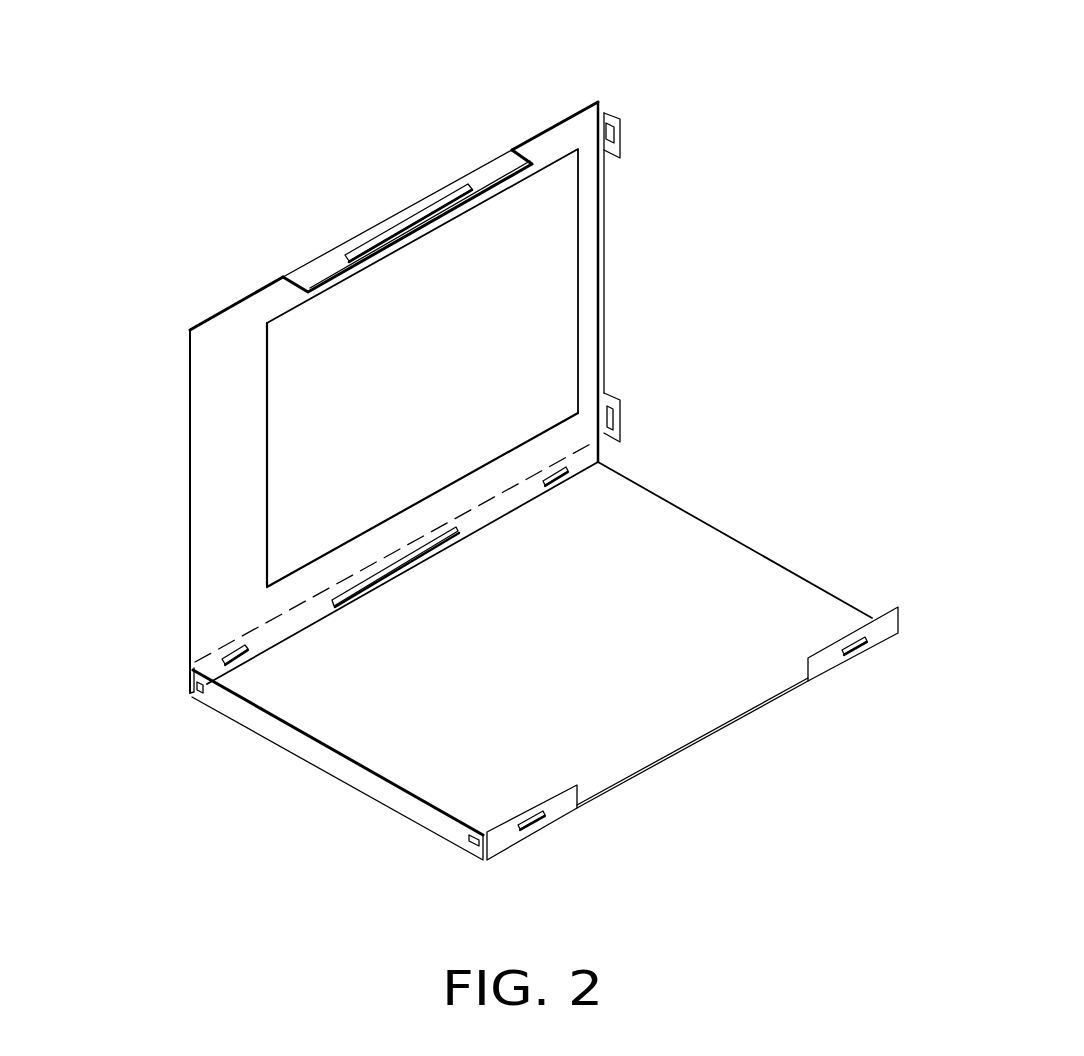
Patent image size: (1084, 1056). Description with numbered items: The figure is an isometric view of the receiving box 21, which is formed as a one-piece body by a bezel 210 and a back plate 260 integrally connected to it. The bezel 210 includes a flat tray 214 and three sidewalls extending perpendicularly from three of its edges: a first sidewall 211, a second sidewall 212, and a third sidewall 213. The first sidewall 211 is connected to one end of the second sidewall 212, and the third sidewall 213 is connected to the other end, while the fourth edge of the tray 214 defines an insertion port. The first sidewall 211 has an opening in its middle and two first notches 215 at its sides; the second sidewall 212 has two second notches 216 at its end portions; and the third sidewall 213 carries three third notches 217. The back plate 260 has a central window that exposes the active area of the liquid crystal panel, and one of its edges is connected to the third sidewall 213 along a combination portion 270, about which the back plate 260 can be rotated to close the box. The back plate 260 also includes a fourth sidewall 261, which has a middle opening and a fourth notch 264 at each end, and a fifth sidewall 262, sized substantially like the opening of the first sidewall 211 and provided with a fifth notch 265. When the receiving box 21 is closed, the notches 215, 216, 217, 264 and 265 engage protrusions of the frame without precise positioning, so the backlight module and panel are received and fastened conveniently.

The receiving box 21 is at (562, 67).
The bezel 210 is at (767, 526).
The first sidewall 211 is at (822, 665).
The second sidewall 212 is at (372, 785).
The third sidewall 213 is at (265, 637).
The tray 214 is at (647, 503).
The first notches 215 is at (540, 826).
The second notches 216 is at (200, 694).
The third notches 217 is at (228, 646).
The back plate 260 is at (626, 237).
The fourth sidewall 261 is at (612, 118).
The fifth sidewall 262 is at (486, 173).
The fourth notch 264 is at (614, 133).
The fifth notch 265 is at (373, 243).
The combination portion 270 is at (582, 450).